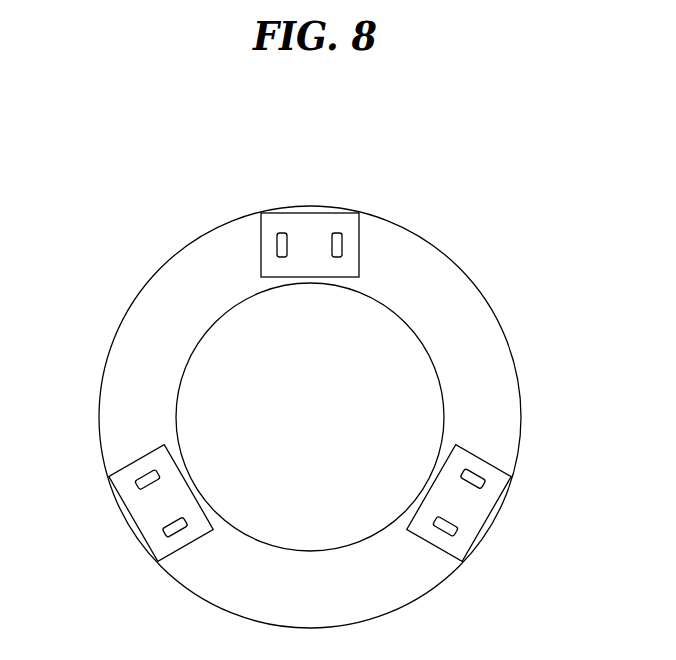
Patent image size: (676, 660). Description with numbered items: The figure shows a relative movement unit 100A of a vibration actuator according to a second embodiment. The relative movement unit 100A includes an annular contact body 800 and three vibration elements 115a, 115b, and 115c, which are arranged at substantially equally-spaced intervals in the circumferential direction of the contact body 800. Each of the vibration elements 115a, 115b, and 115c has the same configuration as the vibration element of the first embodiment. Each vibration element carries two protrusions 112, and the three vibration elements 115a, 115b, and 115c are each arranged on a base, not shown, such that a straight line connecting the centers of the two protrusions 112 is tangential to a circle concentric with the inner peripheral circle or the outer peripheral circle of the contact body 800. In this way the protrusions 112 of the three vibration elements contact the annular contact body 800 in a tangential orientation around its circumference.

The relative movement unit 100A is at (148, 198).
The contact body 800 is at (493, 333).
The vibration element 115a is at (317, 222).
The vibration element 115b is at (142, 508).
The vibration element 115c is at (473, 513).
The protrusions 112 is at (338, 232).